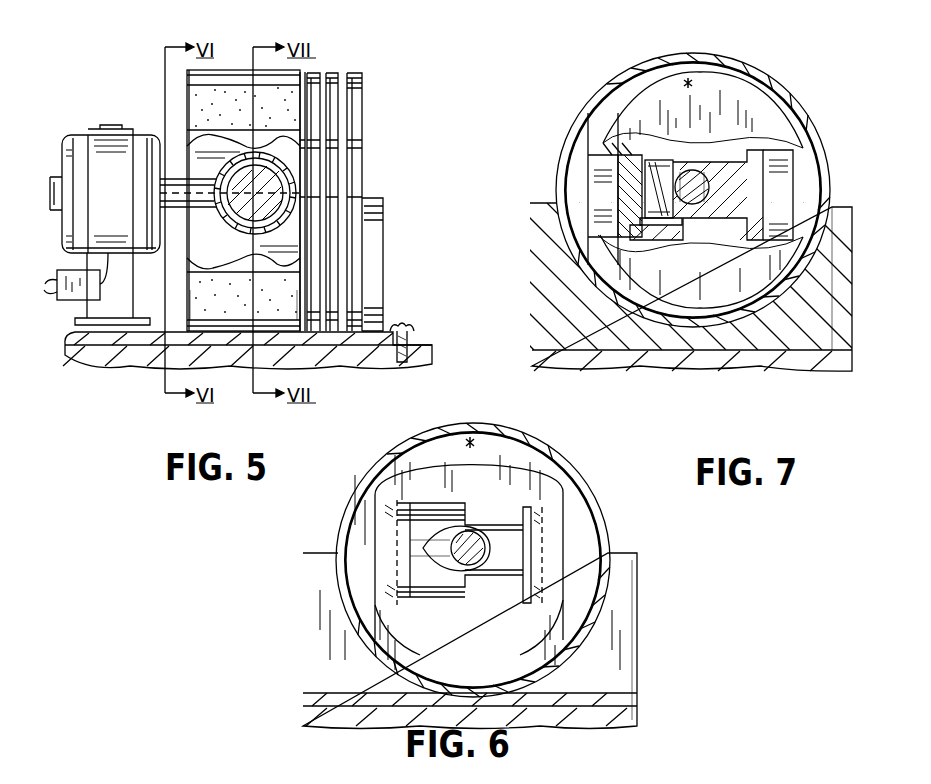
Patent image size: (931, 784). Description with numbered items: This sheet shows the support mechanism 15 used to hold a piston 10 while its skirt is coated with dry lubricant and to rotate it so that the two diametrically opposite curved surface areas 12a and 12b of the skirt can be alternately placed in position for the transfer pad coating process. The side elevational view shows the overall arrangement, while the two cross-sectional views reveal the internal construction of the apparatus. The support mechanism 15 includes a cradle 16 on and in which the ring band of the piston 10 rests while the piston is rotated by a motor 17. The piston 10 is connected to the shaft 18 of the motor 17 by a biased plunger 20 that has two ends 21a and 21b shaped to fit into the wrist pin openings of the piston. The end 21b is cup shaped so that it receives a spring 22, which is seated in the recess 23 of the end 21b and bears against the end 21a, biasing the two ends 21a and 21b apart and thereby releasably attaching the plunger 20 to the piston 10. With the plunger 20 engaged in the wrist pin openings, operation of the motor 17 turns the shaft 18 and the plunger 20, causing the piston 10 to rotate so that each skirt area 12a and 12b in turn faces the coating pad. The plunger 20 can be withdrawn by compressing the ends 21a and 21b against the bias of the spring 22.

In FIG. 7, the piston 10 is at (828, 98).
In FIG. 6, the piston 10 is at (614, 506).
In FIG. 5, the curved surface area 12a is at (235, 84).
In FIG. 7, the curved surface area 12a is at (596, 112).
In FIG. 6, the curved surface area 12a is at (413, 442).
In FIG. 5, the curved surface area 12b is at (214, 330).
In FIG. 7, the curved surface area 12b is at (772, 310).
In FIG. 6, the curved surface area 12b is at (469, 635).
In FIG. 5, the support mechanism 15 is at (380, 166).
In FIG. 7, the support mechanism 15 is at (853, 352).
In FIG. 6, the support mechanism 15 is at (640, 590).
In FIG. 5, the cradle 16 is at (377, 266).
In FIG. 7, the cradle 16 is at (841, 283).
In FIG. 6, the cradle 16 is at (628, 606).
In FIG. 5, the motor 17 is at (82, 140).
In FIG. 5, the shaft 18 is at (178, 178).
In FIG. 7, the shaft 18 is at (690, 172).
In FIG. 6, the shaft 18 is at (474, 536).
In FIG. 5, the biased plunger 20 is at (244, 214).
In FIG. 7, the biased plunger 20 is at (718, 158).
In FIG. 6, the biased plunger 20 is at (507, 518).
In FIG. 7, the end 21a is at (808, 196).
In FIG. 6, the end 21a is at (527, 596).
In FIG. 7, the end 21b is at (612, 202).
In FIG. 6, the end 21b is at (455, 600).
In FIG. 7, the spring 22 is at (648, 240).
In FIG. 7, the recess 23 is at (710, 241).